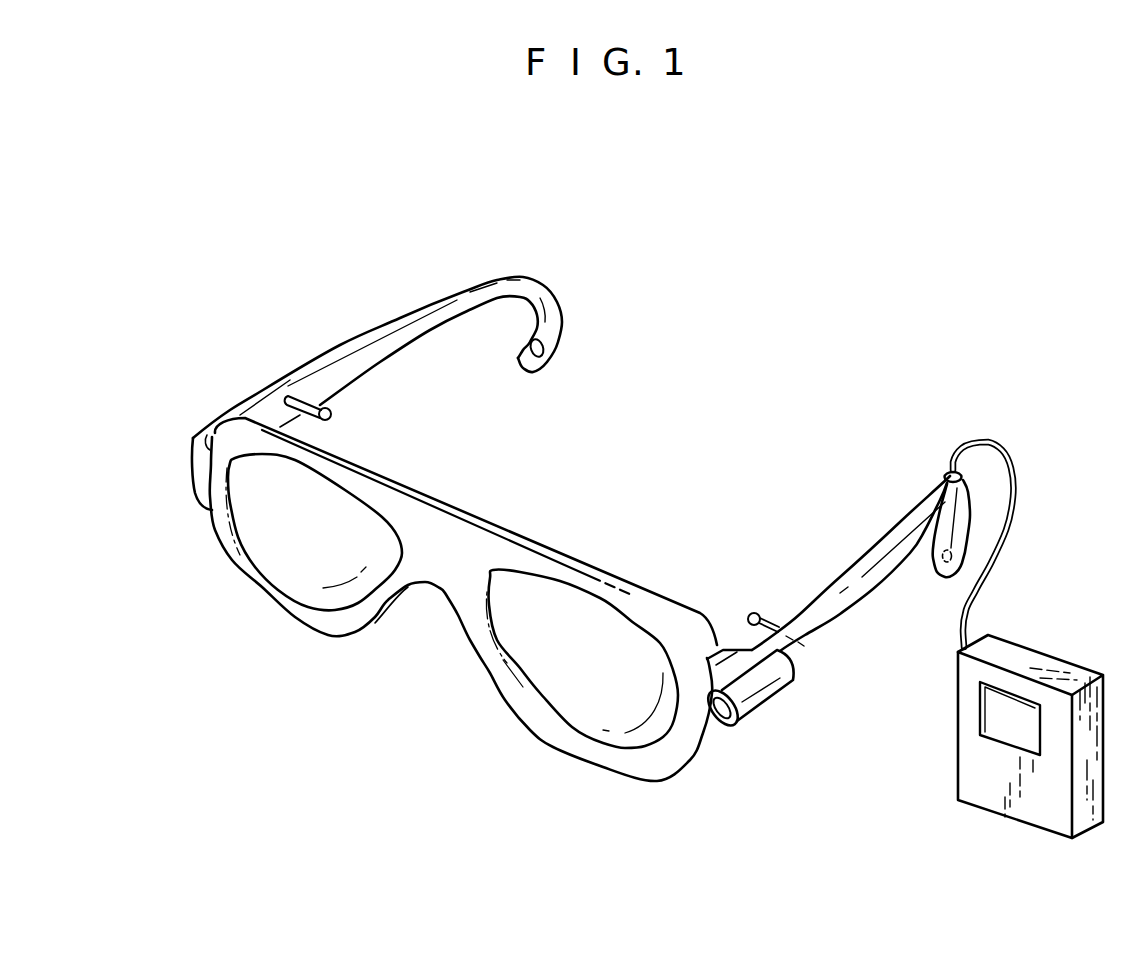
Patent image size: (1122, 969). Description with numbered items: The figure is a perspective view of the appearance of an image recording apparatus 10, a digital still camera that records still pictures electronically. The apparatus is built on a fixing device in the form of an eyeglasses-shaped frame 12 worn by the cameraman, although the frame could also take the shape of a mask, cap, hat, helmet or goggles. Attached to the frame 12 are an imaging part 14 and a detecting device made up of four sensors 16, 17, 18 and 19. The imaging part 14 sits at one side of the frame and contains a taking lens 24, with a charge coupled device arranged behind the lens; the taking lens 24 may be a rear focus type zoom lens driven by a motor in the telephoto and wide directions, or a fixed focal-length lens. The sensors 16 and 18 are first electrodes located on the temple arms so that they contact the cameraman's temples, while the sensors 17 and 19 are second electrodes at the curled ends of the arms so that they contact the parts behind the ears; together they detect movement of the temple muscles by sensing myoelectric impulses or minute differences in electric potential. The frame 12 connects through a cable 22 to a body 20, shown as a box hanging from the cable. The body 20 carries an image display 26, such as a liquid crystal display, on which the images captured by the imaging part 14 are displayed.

The image recording apparatus 10 is at (423, 243).
The eyeglasses-shaped frame 12 is at (878, 551).
The imaging part 14 is at (723, 737).
The sensor 16 is at (305, 393).
The sensor 17 is at (545, 352).
The sensor 18 is at (768, 625).
The sensor 19 is at (940, 553).
The body 20 is at (1023, 657).
The cable 22 is at (1012, 505).
The taking lens 24 is at (731, 720).
The image display 26 is at (997, 713).